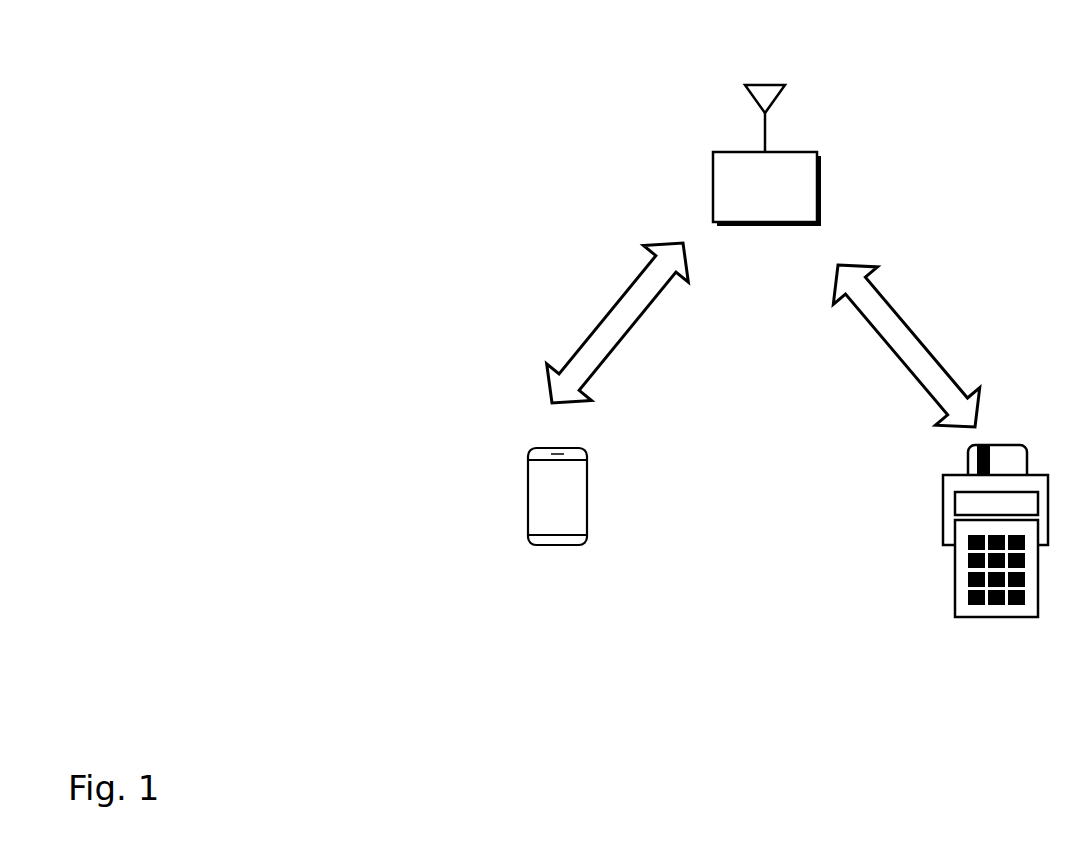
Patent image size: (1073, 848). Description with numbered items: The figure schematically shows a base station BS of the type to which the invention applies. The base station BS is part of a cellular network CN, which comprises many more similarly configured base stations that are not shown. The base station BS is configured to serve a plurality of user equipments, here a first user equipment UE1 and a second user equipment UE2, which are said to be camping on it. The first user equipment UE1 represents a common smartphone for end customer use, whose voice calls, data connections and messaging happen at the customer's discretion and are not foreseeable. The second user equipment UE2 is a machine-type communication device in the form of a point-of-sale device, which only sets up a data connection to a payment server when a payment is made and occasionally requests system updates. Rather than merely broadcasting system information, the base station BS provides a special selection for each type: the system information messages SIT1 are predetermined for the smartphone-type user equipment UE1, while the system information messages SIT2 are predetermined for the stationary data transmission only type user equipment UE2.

The base station BS is at (767, 155).
The cellular network CN is at (920, 76).
The system information messages for the smartphone type SIT1 is at (618, 323).
The system information messages for the stationary data transmission only type SIT2 is at (906, 345).
The first user equipment UE1 is at (557, 518).
The second user equipment UE2 is at (995, 567).